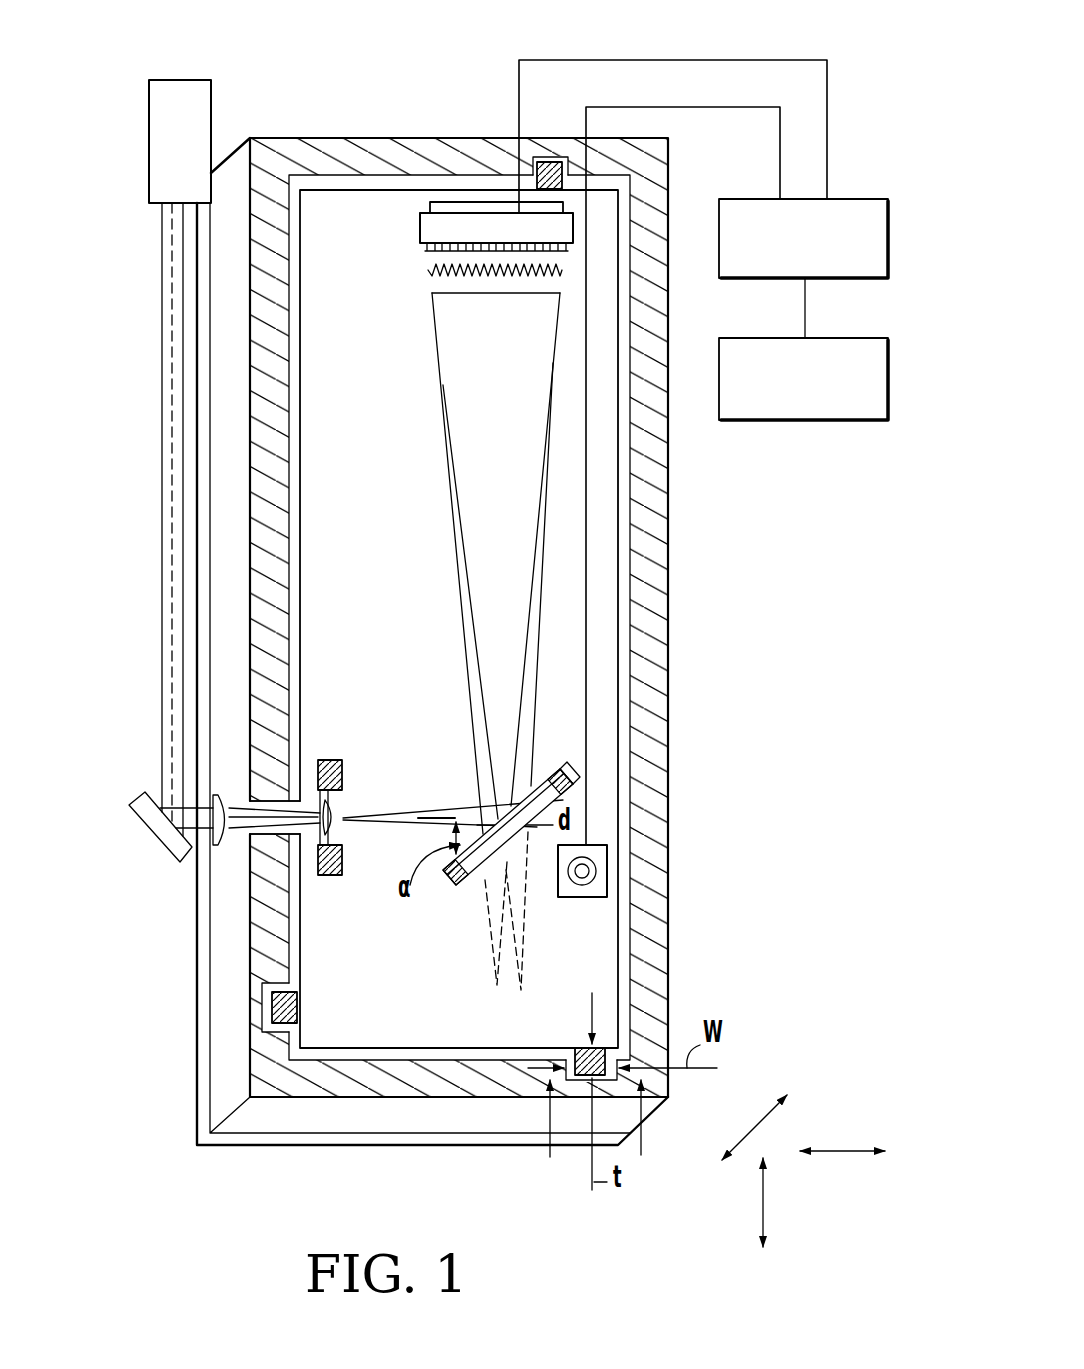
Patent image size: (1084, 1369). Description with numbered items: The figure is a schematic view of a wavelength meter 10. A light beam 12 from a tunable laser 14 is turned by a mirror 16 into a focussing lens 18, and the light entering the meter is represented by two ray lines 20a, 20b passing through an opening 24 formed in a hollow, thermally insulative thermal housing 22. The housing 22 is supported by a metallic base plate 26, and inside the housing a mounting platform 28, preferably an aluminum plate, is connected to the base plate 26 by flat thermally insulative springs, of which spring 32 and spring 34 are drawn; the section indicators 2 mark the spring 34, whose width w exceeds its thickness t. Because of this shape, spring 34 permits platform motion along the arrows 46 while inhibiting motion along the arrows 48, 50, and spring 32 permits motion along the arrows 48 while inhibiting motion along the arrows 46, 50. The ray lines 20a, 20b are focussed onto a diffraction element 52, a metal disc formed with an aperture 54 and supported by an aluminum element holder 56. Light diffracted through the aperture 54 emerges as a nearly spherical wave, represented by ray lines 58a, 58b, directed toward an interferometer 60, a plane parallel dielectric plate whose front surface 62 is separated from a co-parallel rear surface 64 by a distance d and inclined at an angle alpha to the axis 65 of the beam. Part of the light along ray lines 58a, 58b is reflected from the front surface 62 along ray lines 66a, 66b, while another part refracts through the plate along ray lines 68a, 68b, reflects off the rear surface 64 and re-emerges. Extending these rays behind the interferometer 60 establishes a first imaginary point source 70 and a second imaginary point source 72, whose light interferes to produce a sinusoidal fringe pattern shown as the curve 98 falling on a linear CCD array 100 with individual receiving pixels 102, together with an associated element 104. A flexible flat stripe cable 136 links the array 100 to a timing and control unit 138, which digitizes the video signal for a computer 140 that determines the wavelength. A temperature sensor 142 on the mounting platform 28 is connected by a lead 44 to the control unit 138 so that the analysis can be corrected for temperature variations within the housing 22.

The wavelength meter 10 is at (313, 48).
The light beam 12 is at (160, 322).
The tunable laser 14 is at (189, 80).
The mirror 16 is at (143, 826).
The focussing lens 18 is at (217, 848).
The ray line 20a is at (250, 803).
The ray line 20b is at (250, 836).
The thermal housing 22 is at (328, 1087).
The opening 24 is at (248, 806).
The base plate 26 is at (467, 1140).
The mounting platform 28 is at (322, 205).
The spring 32 is at (262, 1010).
The spring 34 is at (553, 160).
The detector lead 44 is at (780, 149).
The arrows 46 is at (765, 1200).
The arrows 48 is at (838, 1153).
The arrows 50 is at (752, 1127).
The diffraction element 52 is at (318, 852).
The aperture 54 is at (316, 788).
The element holder 56 is at (340, 764).
The ray line 58a is at (405, 810).
The ray line 58b is at (405, 828).
The interferometer 60 is at (455, 878).
The front surface 62 is at (545, 770).
The rear surface 64 is at (546, 758).
The axis 65 is at (445, 815).
The ray line 66a is at (539, 515).
The ray line 66b is at (452, 518).
The ray line 68a is at (543, 553).
The ray line 68b is at (464, 553).
The first imaginary point source 70 is at (496, 992).
The second imaginary point source 72 is at (522, 995).
The curve 98 is at (428, 270).
The CCD array 100 is at (420, 228).
The receiving pixels 102 is at (543, 253).
The circuit board 104 is at (570, 230).
The flexible flat stripe cable 136 is at (827, 143).
The timing and control unit 138 is at (860, 280).
The computer 140 is at (865, 425).
The temperature sensor 142 is at (597, 880).
The section line 2 is at (597, 1093).